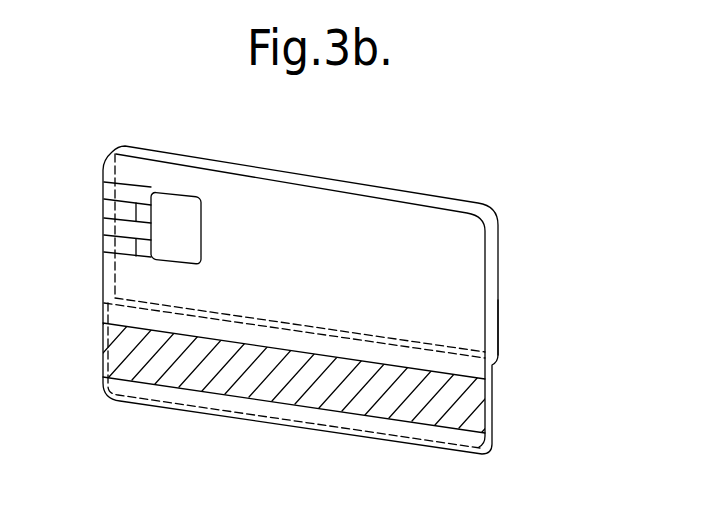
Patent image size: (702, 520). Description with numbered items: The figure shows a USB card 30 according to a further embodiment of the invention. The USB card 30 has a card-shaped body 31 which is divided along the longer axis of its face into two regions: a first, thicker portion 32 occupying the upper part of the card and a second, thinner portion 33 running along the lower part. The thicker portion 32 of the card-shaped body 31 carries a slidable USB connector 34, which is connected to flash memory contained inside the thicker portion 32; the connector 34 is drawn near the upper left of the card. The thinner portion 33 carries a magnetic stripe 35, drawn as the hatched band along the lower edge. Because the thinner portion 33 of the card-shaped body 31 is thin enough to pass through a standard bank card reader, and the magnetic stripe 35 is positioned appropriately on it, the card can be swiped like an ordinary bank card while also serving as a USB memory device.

The USB card 30 is at (484, 166).
The card-shaped body 31 is at (273, 223).
The thicker portion 32 is at (465, 297).
The thinner portion 33 is at (248, 405).
The slidable USB connector 34 is at (182, 202).
The magnetic stripe 35 is at (125, 353).